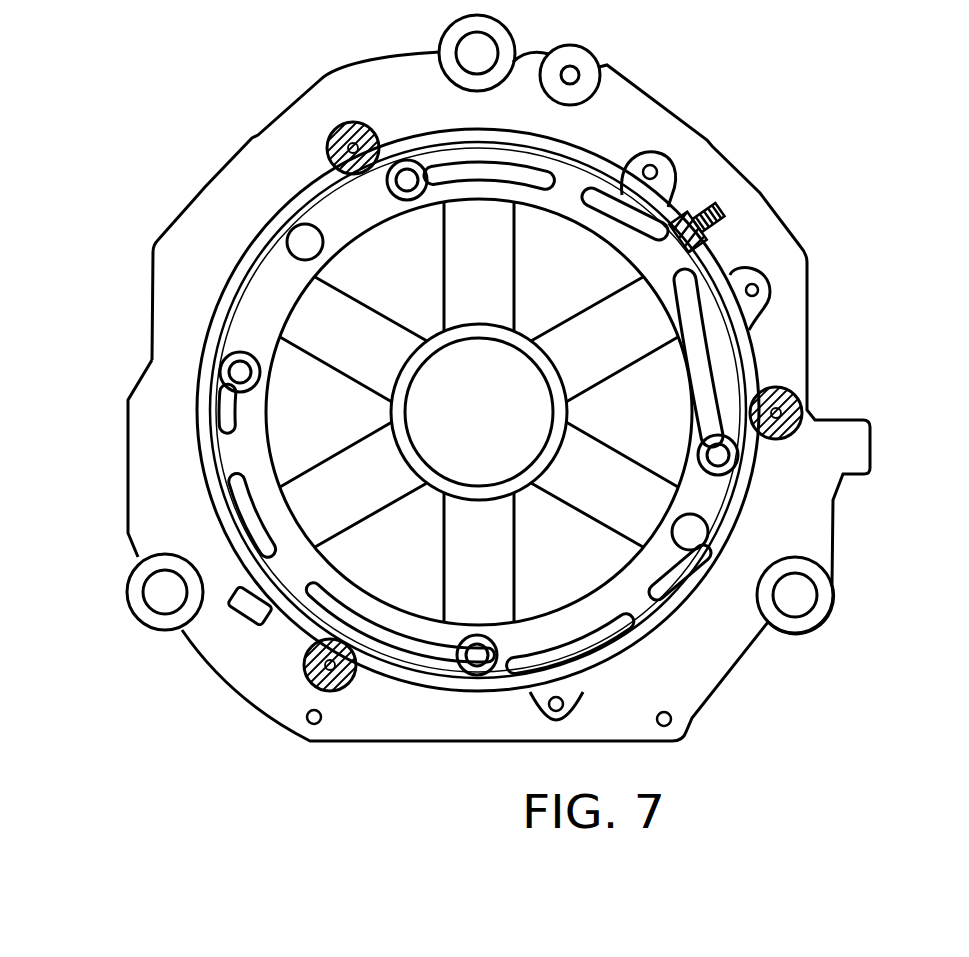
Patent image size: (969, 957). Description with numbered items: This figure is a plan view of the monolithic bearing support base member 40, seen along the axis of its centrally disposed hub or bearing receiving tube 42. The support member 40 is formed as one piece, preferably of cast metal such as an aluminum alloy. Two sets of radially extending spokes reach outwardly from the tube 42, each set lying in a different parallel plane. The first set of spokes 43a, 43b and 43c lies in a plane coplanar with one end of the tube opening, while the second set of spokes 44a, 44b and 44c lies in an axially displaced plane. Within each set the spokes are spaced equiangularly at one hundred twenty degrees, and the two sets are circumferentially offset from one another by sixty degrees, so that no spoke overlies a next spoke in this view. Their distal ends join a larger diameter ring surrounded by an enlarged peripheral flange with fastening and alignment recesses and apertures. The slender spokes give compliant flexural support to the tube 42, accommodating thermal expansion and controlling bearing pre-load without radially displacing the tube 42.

The bearing support base member 40 is at (133, 443).
The hub or bearing receiving tube 42 is at (500, 345).
The spoke 43a is at (502, 560).
The spoke 43b is at (372, 354).
The spoke 43c is at (632, 353).
The spoke 44a is at (373, 499).
The spoke 44b is at (503, 280).
The spoke 44c is at (629, 505).